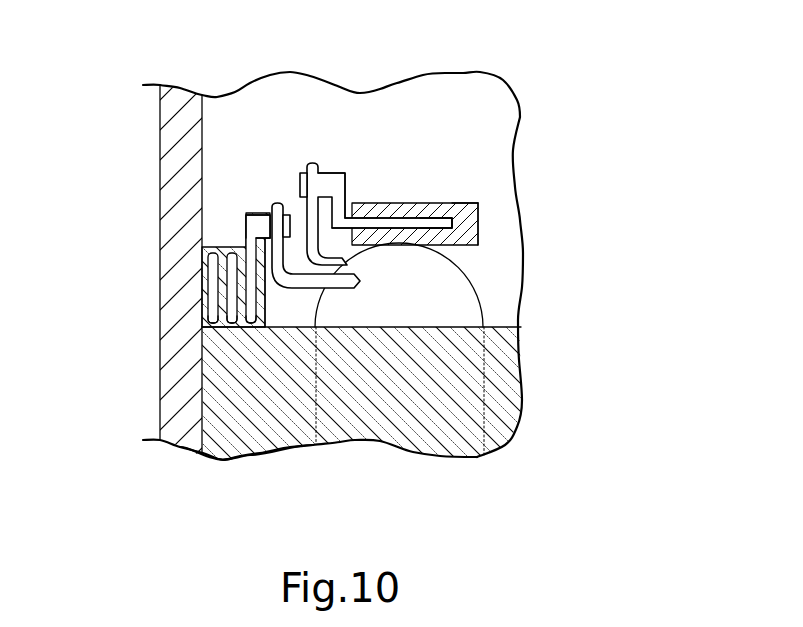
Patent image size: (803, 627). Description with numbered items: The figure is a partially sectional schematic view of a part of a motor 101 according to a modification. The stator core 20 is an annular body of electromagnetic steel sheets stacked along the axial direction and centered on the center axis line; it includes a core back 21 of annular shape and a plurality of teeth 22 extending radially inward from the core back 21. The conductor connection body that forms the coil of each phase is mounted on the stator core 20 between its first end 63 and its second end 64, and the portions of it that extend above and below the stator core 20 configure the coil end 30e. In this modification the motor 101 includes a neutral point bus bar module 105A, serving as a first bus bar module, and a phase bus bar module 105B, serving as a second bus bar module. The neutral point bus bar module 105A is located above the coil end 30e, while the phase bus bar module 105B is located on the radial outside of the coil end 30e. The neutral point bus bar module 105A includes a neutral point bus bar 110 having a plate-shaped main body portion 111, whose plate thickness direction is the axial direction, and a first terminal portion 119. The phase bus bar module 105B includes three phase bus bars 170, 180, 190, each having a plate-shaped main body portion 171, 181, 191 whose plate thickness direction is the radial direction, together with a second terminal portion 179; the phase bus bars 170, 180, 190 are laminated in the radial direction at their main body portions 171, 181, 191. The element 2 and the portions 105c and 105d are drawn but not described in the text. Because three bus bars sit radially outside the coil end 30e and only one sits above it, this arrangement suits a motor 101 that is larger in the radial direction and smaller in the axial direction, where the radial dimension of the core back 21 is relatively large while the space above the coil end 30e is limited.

The motor 101 is at (540, 70).
The housing 2 is at (499, 298).
The stator core 20 is at (502, 323).
The core back 21 is at (242, 435).
The teeth 22 is at (397, 440).
The coil end 30e is at (452, 280).
The first end 63 is at (278, 202).
The second end 64 is at (310, 162).
The neutral point bus bar module 105A is at (456, 191).
The phase bus bar module 105B is at (225, 243).
The plate end portion 105c is at (470, 201).
The holding wall 105d is at (243, 276).
The neutral point bus bar 110 is at (400, 217).
The main body portion 111 is at (428, 218).
The first terminal portion 119 is at (333, 172).
The phase bus bar 170 is at (226, 285).
The main body portion 171 is at (252, 325).
The second terminal portion 179 is at (258, 212).
The phase bus bar 180 is at (231, 254).
The main body portion 181 is at (240, 325).
The phase bus bar 190 is at (201, 304).
The main body portion 191 is at (220, 325).